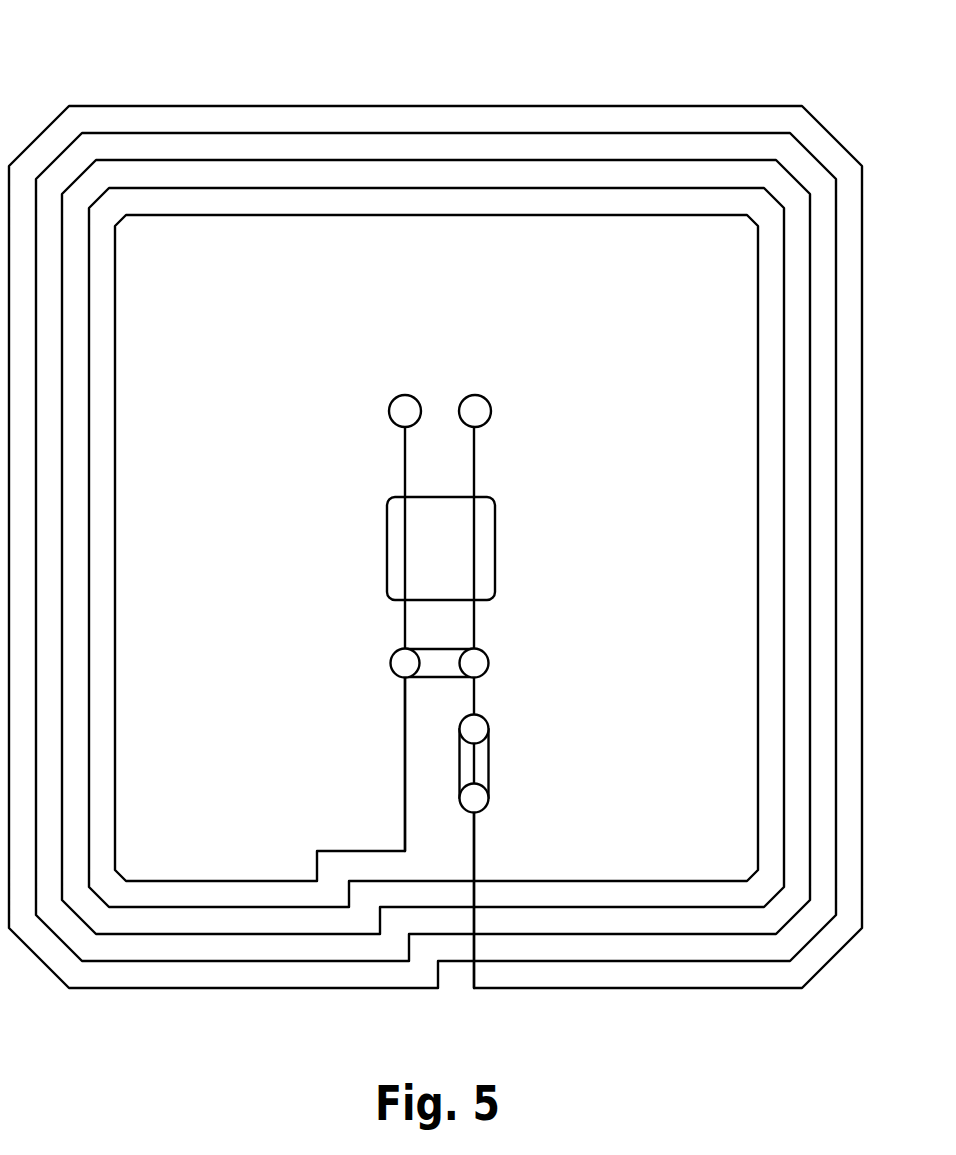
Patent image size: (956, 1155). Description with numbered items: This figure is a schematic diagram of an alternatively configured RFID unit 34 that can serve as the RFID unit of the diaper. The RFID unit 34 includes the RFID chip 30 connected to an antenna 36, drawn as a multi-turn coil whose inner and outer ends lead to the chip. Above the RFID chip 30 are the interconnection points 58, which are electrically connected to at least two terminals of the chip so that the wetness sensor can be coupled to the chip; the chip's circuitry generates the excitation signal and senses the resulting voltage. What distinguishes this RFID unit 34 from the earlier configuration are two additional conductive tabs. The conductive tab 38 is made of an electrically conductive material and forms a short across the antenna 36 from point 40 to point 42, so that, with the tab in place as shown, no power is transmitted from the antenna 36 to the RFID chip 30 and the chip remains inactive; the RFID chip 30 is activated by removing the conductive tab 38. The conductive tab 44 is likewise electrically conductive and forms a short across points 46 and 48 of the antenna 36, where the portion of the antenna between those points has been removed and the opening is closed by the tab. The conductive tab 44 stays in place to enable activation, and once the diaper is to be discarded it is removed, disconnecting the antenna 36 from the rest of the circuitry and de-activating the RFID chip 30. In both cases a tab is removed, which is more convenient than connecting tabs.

The RFID unit 34 is at (90, 51).
The antenna 36 is at (118, 634).
The RFID chip 30 is at (385, 532).
The interconnection points 58 is at (400, 396).
The conductive tab 38 is at (452, 650).
The point 40 is at (392, 654).
The point 42 is at (487, 655).
The conductive tab 44 is at (488, 767).
The point 46 is at (488, 722).
The point 48 is at (486, 808).